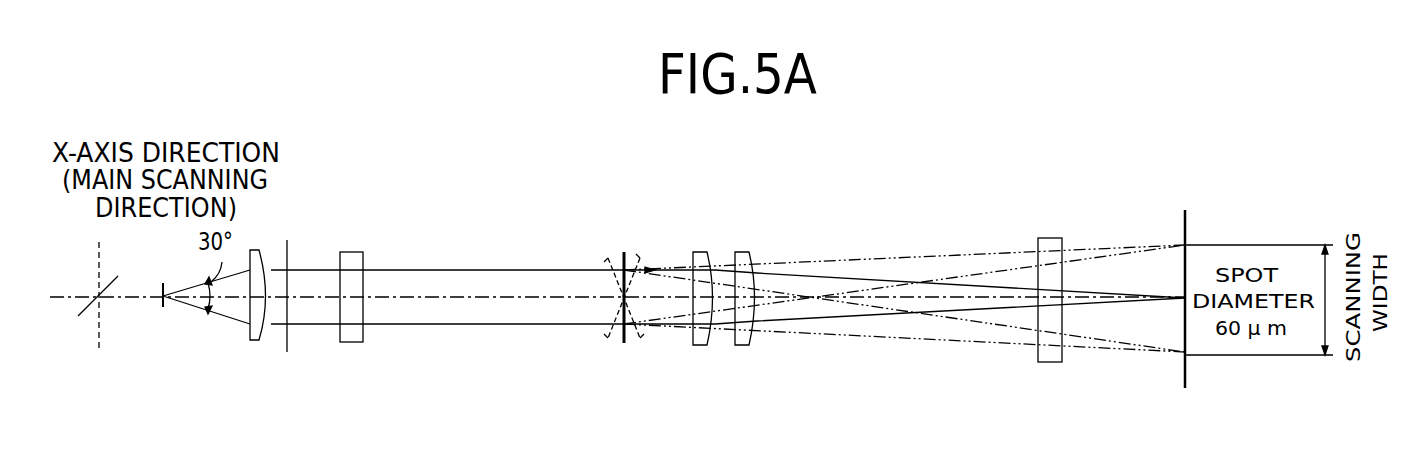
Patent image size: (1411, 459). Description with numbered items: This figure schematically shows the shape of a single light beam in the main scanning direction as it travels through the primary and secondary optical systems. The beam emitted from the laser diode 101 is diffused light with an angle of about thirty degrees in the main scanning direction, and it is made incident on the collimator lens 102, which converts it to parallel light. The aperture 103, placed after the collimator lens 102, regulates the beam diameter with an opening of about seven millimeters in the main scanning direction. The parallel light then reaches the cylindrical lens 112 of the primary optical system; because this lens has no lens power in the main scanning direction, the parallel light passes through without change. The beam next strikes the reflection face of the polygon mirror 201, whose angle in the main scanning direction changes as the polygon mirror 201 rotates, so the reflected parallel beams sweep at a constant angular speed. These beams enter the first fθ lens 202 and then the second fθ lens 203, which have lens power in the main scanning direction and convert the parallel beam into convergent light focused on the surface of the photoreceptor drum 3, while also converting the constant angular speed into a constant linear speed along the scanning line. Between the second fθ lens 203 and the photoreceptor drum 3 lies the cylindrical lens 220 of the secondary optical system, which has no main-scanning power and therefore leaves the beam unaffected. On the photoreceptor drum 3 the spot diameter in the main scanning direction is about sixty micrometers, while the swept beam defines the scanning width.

The laser diode 101 is at (161, 276).
The collimator lens 102 is at (257, 340).
The aperture 103 is at (287, 352).
The cylindrical lens 112 is at (352, 255).
The polygon mirror 201 is at (625, 252).
The first fθ lens 202 is at (700, 252).
The second fθ lens 203 is at (745, 252).
The cylindrical lens 220 is at (1052, 240).
The photoreceptor drum 3 is at (1185, 388).